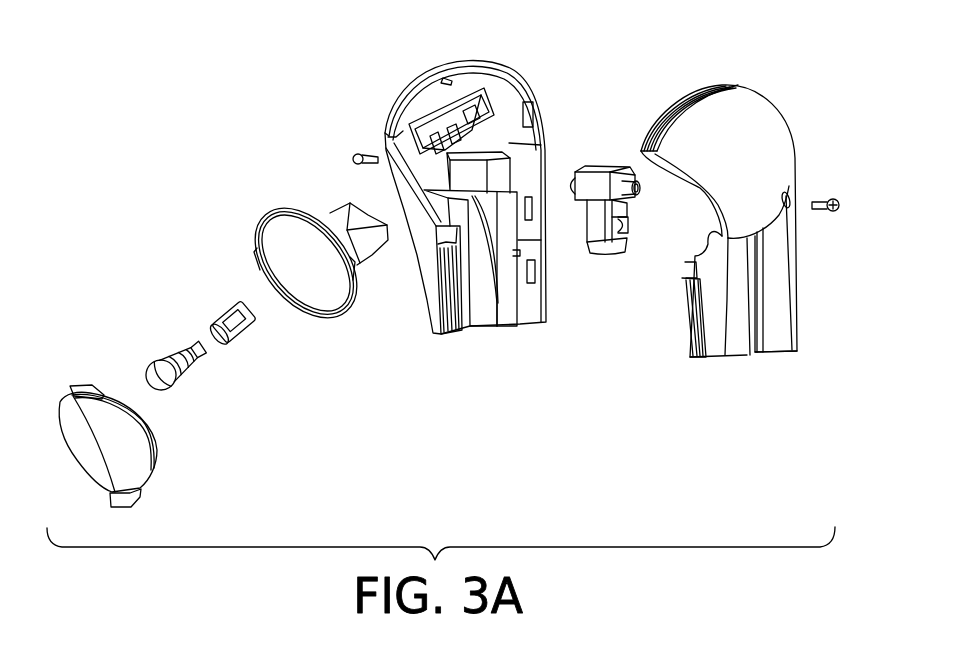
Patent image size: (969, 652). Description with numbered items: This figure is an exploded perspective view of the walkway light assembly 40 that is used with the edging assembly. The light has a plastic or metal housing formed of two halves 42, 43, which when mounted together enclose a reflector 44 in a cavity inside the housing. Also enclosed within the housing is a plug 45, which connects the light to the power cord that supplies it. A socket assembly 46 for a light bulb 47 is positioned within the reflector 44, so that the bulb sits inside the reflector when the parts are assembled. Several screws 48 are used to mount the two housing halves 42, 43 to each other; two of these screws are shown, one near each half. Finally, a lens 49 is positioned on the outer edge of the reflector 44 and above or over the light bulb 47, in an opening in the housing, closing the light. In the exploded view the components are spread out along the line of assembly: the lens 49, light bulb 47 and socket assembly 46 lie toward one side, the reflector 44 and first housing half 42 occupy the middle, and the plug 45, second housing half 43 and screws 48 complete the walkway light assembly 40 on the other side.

The walkway light assembly 40 is at (208, 188).
The housing half 42 is at (458, 62).
The housing half 43 is at (735, 112).
The reflector 44 is at (302, 210).
The plug 45 is at (613, 167).
The socket assembly 46 is at (230, 305).
The light bulb 47 is at (168, 357).
The screws 48 is at (353, 152).
The lens 49 is at (94, 383).